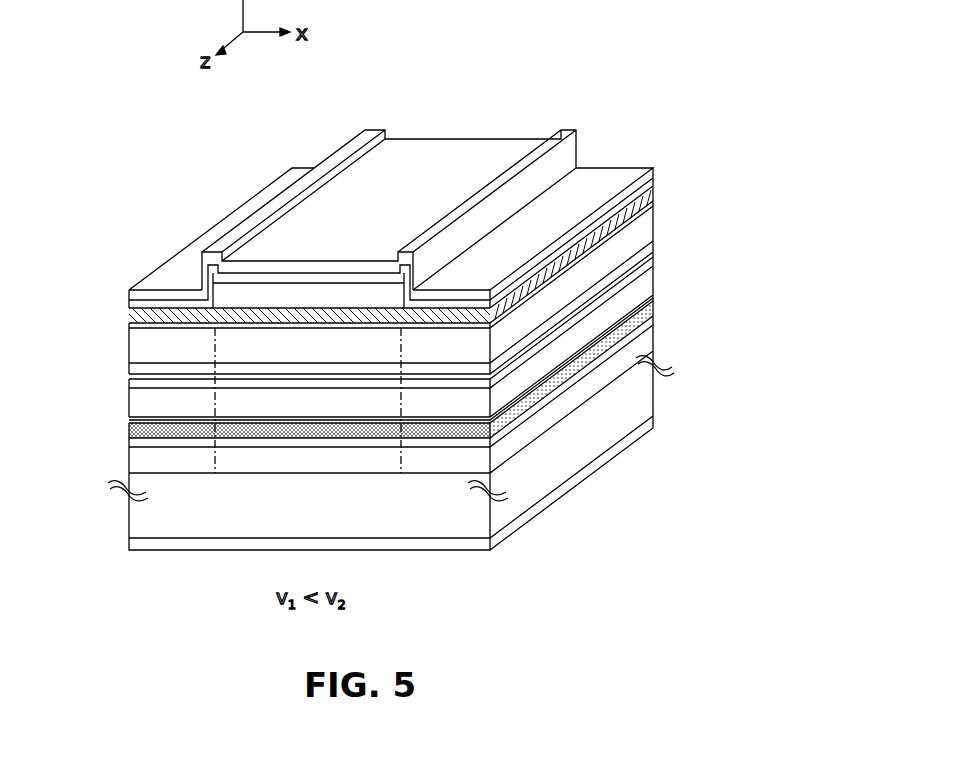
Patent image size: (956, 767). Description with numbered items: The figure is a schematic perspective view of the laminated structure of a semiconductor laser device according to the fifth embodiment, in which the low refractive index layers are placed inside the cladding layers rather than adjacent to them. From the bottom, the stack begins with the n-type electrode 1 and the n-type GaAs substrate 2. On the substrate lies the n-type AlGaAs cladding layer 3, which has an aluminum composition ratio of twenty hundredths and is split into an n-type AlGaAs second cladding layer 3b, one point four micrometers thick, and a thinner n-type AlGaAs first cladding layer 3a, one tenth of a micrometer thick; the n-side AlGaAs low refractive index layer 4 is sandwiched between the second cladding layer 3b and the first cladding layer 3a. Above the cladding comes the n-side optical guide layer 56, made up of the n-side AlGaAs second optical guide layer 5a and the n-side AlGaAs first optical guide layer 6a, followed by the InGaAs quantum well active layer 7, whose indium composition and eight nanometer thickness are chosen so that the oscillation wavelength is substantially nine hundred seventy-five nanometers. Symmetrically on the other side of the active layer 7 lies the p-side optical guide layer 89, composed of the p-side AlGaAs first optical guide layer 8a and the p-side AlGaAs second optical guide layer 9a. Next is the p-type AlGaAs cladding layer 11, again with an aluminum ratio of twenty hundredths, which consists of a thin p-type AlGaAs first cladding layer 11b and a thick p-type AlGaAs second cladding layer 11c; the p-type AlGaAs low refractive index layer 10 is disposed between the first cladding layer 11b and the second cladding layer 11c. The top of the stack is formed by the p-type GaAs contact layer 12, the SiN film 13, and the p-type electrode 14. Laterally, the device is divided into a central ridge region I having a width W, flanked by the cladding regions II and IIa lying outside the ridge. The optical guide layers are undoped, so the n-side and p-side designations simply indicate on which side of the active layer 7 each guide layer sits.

The n-type electrode 1 is at (613, 457).
The n-type GaAs substrate 2 is at (610, 425).
The n-type AlGaAs cladding layer 3 is at (792, 340).
The n-type AlGaAs first cladding layer 3a is at (653, 300).
The n-type AlGaAs second cladding layer 3b is at (648, 333).
The n-side AlGaAs low refractive index layer 4 is at (612, 360).
The n-side AlGaAs second optical guide layer 5a is at (645, 282).
The n-side AlGaAs first optical guide layer 6a is at (656, 262).
The n-side optical guide layer 56 is at (788, 265).
The InGaAs quantum well active layer 7 is at (655, 252).
The p-side AlGaAs first optical guide layer 8a is at (655, 242).
The p-side AlGaAs second optical guide layer 9a is at (656, 218).
The p-side optical guide layer 89 is at (780, 163).
The p-type AlGaAs low refractive index layer 10 is at (655, 187).
The p-type AlGaAs cladding layer 11 is at (33, 203).
The p-type AlGaAs first cladding layer 11b is at (128, 322).
The p-type AlGaAs second cladding layer 11c is at (263, 297).
The p-type GaAs contact layer 12 is at (320, 277).
The SiN film 13 is at (647, 170).
The p-type electrode 14 is at (594, 181).
The width W is at (216, 404).
The region I is at (399, 447).
The region II is at (133, 447).
The region IIa is at (403, 447).